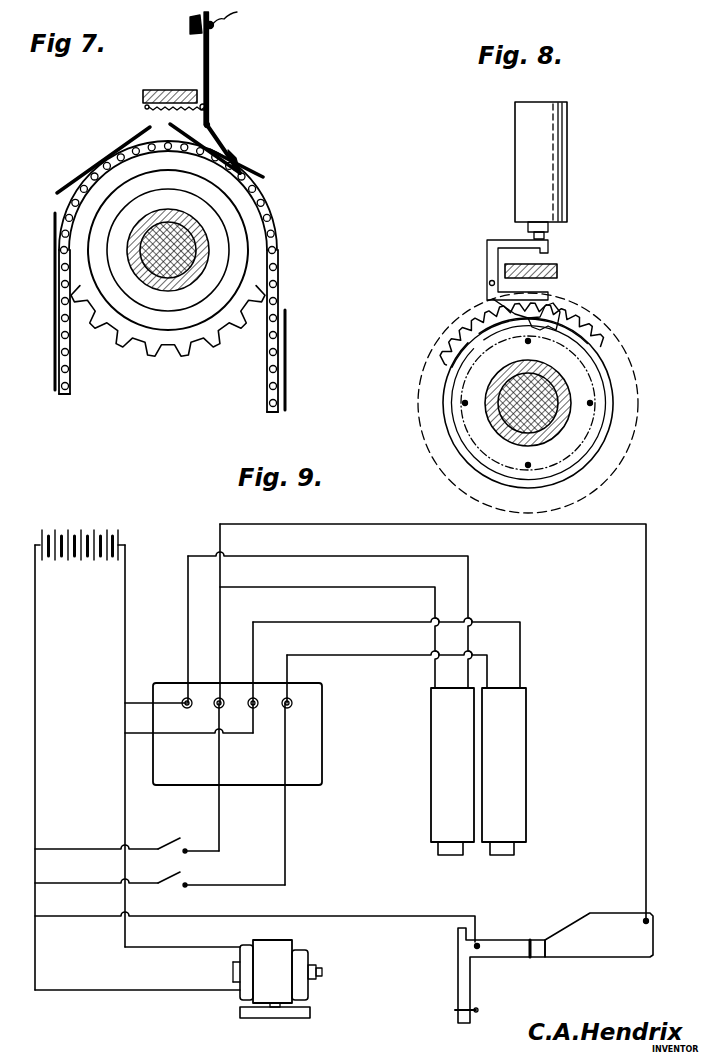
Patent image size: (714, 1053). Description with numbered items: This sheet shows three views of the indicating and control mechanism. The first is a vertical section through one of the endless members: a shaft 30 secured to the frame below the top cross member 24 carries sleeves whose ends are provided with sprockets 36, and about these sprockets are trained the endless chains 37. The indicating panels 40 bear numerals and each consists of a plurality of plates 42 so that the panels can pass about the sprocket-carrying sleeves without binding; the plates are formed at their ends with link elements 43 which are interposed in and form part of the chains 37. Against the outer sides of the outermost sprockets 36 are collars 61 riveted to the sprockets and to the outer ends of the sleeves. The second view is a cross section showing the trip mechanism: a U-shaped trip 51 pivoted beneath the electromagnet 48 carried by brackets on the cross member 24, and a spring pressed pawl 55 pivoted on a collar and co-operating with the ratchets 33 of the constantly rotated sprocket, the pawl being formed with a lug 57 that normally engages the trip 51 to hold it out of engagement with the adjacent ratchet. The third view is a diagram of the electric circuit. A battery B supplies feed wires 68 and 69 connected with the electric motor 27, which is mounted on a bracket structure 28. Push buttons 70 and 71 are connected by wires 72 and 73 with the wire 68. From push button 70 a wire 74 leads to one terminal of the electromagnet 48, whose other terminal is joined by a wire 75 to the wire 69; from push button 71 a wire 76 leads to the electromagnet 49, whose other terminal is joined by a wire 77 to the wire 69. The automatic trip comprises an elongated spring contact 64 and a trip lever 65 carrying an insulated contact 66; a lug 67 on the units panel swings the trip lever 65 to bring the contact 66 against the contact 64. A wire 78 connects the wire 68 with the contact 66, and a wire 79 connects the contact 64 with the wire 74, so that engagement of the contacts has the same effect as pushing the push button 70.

In FIG. 7, the top cross member 24 is at (178, 82).
In FIG. 8, the top cross member 24 is at (557, 268).
In FIG. 9, the electric motor 27 is at (285, 958).
In FIG. 9, the bracket structure 28 is at (265, 1018).
In FIG. 7, the shaft 30 is at (208, 248).
In FIG. 8, the shaft 30 is at (490, 426).
In FIG. 8, the ratchets 33 is at (585, 347).
In FIG. 7, the sprockets 36 is at (190, 348).
In FIG. 7, the endless chains 37 is at (68, 386).
In FIG. 7, the panels 40 is at (257, 166).
In FIG. 7, the plates 42 is at (105, 153).
In FIG. 7, the link elements 43 is at (105, 148).
In FIG. 8, the electromagnet 48 is at (567, 143).
In FIG. 9, the electromagnet 48 is at (431, 738).
In FIG. 9, the electromagnet 49 is at (526, 758).
In FIG. 8, the U-shaped trip 51 is at (487, 245).
In FIG. 8, the spring pressed pawl 55 is at (500, 308).
In FIG. 8, the lug 57 is at (555, 306).
In FIG. 7, the collars 61 is at (195, 35).
In FIG. 9, the spring contact 64 is at (506, 943).
In FIG. 7, the trip lever 65 is at (212, 78).
In FIG. 9, the trip lever 65 is at (470, 990).
In FIG. 7, the insulated contact 66 is at (218, 33).
In FIG. 9, the insulated contact 66 is at (462, 947).
In FIG. 7, the lug 67 is at (237, 150).
In FIG. 9, the lug 67 is at (480, 1010).
In FIG. 9, the feed wire 68 is at (35, 760).
In FIG. 9, the feed wire 69 is at (125, 770).
In FIG. 9, the push button 70 is at (168, 832).
In FIG. 9, the push button 71 is at (170, 858).
In FIG. 9, the wire 72 is at (82, 842).
In FIG. 9, the wire 73 is at (84, 876).
In FIG. 9, the wire 74 is at (219, 815).
In FIG. 9, the wire 75 is at (182, 580).
In FIG. 9, the wire 76 is at (285, 838).
In FIG. 9, the wire 77 is at (194, 728).
In FIG. 9, the wire 78 is at (355, 916).
In FIG. 9, the wire 79 is at (368, 524).
In FIG. 9, the battery B is at (88, 516).